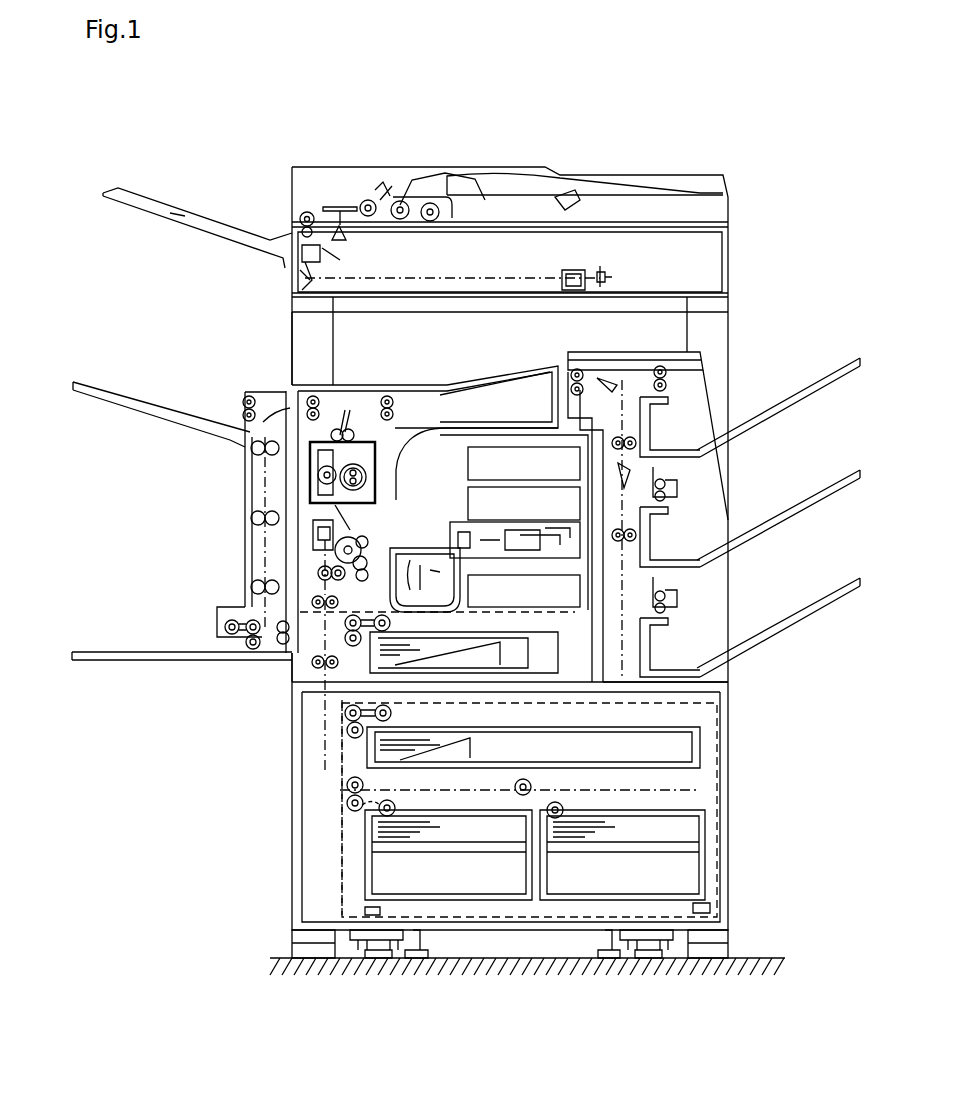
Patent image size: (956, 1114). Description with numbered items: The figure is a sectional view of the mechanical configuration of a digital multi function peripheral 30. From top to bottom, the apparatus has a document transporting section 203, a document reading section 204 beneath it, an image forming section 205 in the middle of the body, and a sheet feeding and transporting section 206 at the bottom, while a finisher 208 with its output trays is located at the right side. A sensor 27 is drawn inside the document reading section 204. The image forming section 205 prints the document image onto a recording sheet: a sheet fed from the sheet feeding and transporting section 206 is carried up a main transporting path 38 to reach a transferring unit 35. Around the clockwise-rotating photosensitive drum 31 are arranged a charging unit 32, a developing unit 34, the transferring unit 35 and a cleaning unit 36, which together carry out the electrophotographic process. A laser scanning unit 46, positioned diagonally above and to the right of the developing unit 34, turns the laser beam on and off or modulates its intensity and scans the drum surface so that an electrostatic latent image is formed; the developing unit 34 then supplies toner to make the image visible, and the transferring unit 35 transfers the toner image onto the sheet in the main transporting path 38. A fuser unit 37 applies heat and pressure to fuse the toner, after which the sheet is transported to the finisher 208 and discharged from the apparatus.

The digital multi function peripheral 30 is at (669, 102).
The document transporting section 203 is at (713, 211).
The document reading section 204 is at (713, 275).
The image forming section 205 is at (297, 383).
The sheet feeding and transporting section 206 is at (717, 793).
The finisher 208 is at (713, 466).
The sensor 27 is at (608, 273).
The fuser unit 37 is at (313, 458).
The cleaning unit 36 is at (391, 469).
The transferring unit 35 is at (310, 530).
The main transporting path 38 is at (330, 588).
The charging unit 32 is at (378, 522).
The photosensitive drum 31 is at (383, 530).
The laser scanning unit 46 is at (483, 524).
The developing unit 34 is at (462, 585).